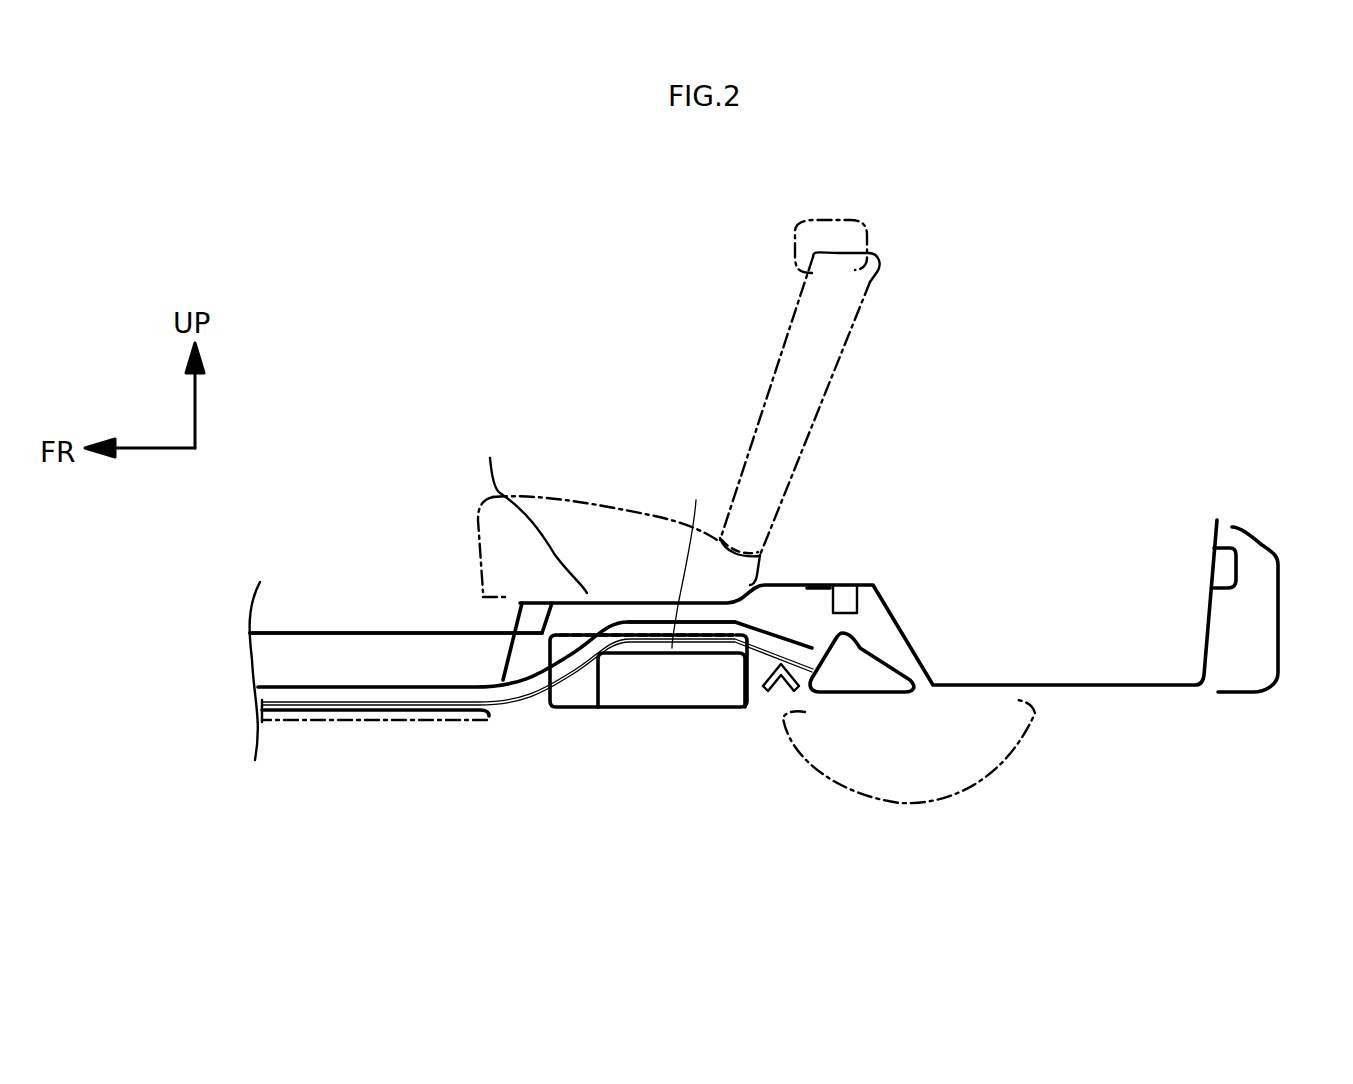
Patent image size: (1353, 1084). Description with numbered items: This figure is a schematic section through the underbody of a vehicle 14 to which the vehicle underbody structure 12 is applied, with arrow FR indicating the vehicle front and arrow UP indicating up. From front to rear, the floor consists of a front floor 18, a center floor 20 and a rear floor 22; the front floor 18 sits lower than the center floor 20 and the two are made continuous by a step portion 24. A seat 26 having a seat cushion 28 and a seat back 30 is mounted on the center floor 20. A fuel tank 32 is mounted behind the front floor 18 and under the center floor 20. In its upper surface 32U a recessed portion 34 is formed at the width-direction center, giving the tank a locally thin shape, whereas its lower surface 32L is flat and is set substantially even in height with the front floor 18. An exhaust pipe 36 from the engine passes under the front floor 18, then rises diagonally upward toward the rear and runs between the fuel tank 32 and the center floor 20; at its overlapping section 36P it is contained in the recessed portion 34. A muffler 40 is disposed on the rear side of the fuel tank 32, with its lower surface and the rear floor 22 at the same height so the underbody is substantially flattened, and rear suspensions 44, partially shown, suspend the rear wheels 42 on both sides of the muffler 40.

The vehicle underbody structure 12 is at (575, 742).
The vehicle 14 is at (1120, 325).
The front floor 18 is at (350, 720).
The center floor 20 is at (513, 511).
The rear floor 22 is at (1160, 688).
The step portion 24 is at (503, 660).
The seat 26 is at (855, 220).
The seat cushion 28 is at (622, 508).
The seat back 30 is at (850, 330).
The fuel tank 32 is at (688, 708).
The lower surface of the fuel tank 32L is at (640, 707).
The upper surface of the fuel tank 32U is at (733, 633).
The recessed portion 34 is at (691, 559).
The exhaust pipe 36 is at (517, 693).
The overlapping section 36P is at (640, 622).
The muffler 40 is at (907, 648).
The rear wheel 42 is at (880, 800).
The rear suspension 44 is at (768, 700).